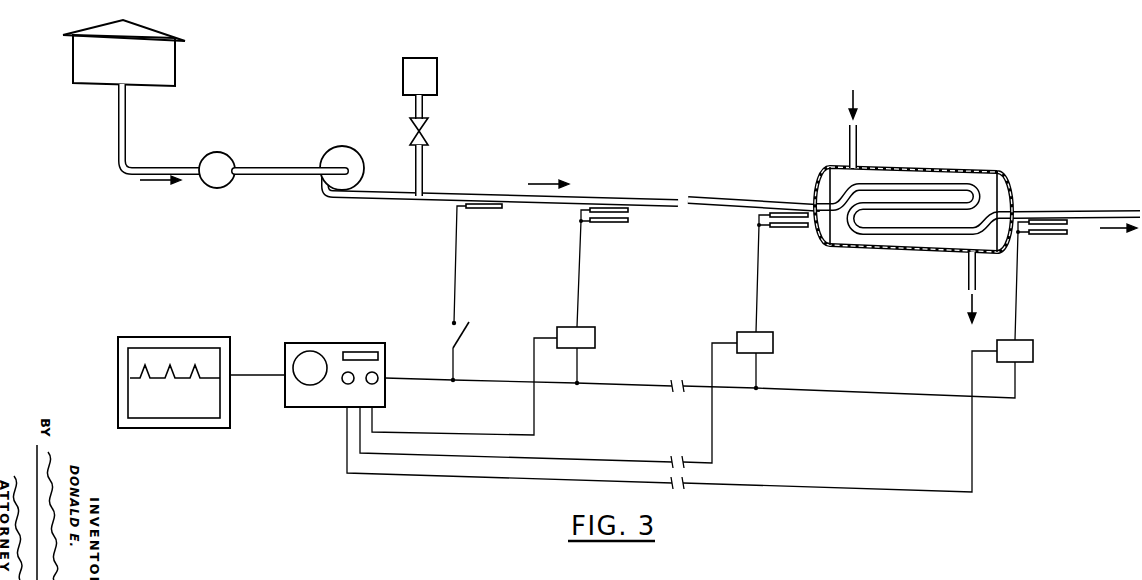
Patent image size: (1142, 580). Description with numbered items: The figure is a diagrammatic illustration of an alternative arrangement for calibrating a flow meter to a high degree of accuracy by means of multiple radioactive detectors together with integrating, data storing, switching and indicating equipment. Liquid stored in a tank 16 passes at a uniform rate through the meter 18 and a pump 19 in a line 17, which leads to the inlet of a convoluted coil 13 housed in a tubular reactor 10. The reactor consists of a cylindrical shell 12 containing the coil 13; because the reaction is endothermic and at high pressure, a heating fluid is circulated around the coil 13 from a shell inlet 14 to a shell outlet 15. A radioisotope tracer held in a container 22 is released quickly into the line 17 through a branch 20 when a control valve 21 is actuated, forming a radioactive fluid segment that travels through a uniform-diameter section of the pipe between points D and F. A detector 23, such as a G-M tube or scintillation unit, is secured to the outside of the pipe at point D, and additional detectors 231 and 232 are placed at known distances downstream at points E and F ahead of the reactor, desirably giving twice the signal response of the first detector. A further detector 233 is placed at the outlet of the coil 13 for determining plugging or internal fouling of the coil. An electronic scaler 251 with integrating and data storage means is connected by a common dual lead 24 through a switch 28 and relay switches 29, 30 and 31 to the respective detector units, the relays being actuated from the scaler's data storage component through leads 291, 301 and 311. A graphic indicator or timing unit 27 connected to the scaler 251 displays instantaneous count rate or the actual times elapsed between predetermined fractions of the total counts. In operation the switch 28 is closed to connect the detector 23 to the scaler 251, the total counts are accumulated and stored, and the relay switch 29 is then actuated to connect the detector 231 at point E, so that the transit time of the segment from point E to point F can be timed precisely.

The tubular reactor 10 is at (928, 197).
The cylindrical shell 12 is at (999, 170).
The convoluted pipe or coil 13 is at (918, 242).
The shell inlet 14 is at (858, 143).
The shell outlet 15 is at (968, 280).
The tank 16 is at (131, 66).
The line 17 is at (383, 200).
The meter 18 is at (232, 149).
The pump 19 is at (356, 152).
The branch 20 is at (423, 180).
The control valve 21 is at (428, 135).
The tracer chamber or container 22 is at (431, 85).
The radioactivity detector 23 is at (490, 210).
The detector 231 is at (630, 212).
The detector 232 is at (789, 229).
The detector 233 is at (1067, 223).
The common dual lead 24 is at (622, 383).
The graphic indicator or timing unit 27 is at (177, 338).
The scaler 251 is at (332, 343).
The switch 28 is at (451, 336).
The relay switch 29 is at (596, 341).
The lead 291 is at (534, 424).
The relay switch 30 is at (775, 344).
The lead 301 is at (712, 448).
The relay switch 31 is at (1035, 352).
The lead 311 is at (972, 477).